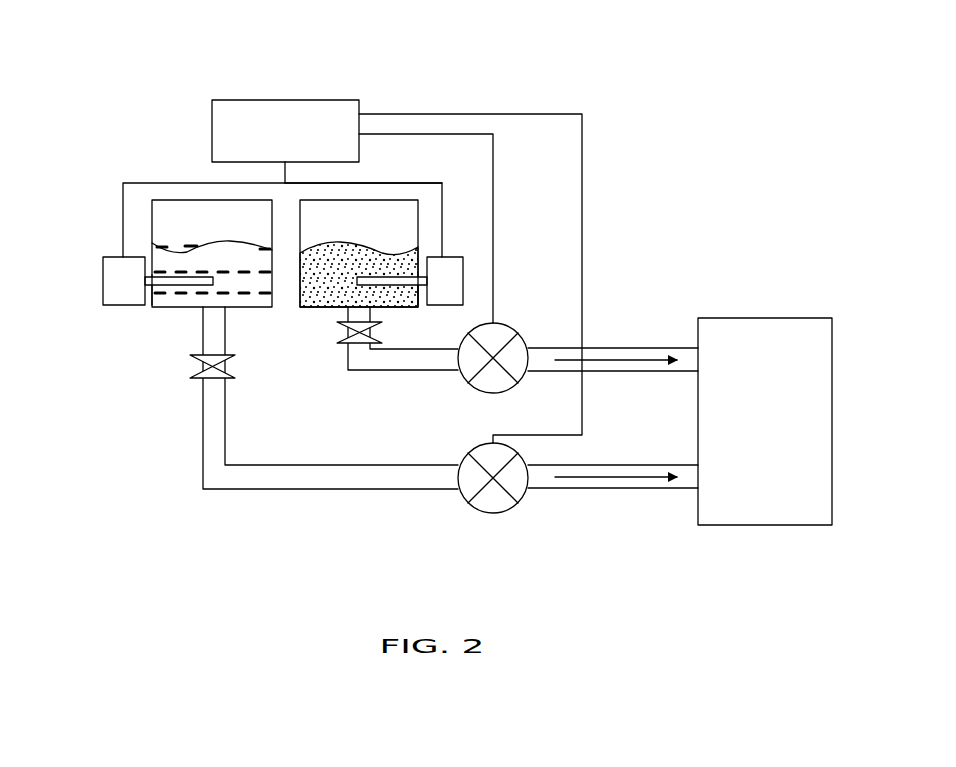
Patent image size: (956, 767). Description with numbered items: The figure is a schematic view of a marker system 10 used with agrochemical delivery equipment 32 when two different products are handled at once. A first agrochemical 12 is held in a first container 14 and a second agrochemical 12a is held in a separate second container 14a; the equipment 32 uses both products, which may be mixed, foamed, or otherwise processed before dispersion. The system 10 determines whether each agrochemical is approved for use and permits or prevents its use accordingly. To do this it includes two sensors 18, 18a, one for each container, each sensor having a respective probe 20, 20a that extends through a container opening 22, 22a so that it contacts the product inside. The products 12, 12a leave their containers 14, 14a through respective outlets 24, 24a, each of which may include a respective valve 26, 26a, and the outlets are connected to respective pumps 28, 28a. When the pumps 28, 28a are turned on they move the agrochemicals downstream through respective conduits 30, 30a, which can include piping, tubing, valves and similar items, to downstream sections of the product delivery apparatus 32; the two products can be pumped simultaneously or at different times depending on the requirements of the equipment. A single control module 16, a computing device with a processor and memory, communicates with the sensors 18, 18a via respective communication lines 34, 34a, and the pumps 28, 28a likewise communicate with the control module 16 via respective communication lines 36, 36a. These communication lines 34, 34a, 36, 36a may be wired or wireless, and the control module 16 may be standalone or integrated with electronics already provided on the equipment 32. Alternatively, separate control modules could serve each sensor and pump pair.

The marker system 10 is at (372, 103).
The agrochemical 12 is at (165, 250).
The agrochemical 12a is at (400, 250).
The container 14 is at (152, 218).
The container 14a is at (418, 212).
The control module 16 is at (285, 100).
The sensor 18 is at (115, 305).
The sensor 18a is at (463, 295).
The probe 20 is at (185, 285).
The probe 20a is at (384, 285).
The container opening 22 is at (152, 300).
The container opening 22a is at (420, 292).
The outlet 24 is at (225, 335).
The outlet 24a is at (346, 318).
The valve 26 is at (225, 380).
The valve 26a is at (345, 345).
The pump 28 is at (508, 510).
The pump 28a is at (475, 388).
The conduit 30 is at (605, 465).
The conduit 30a is at (618, 348).
The agrochemical delivery equipment 32 is at (755, 525).
The communication line 34 is at (163, 183).
The communication line 34a is at (410, 183).
The communication line 36 is at (582, 232).
The communication line 36a is at (493, 232).